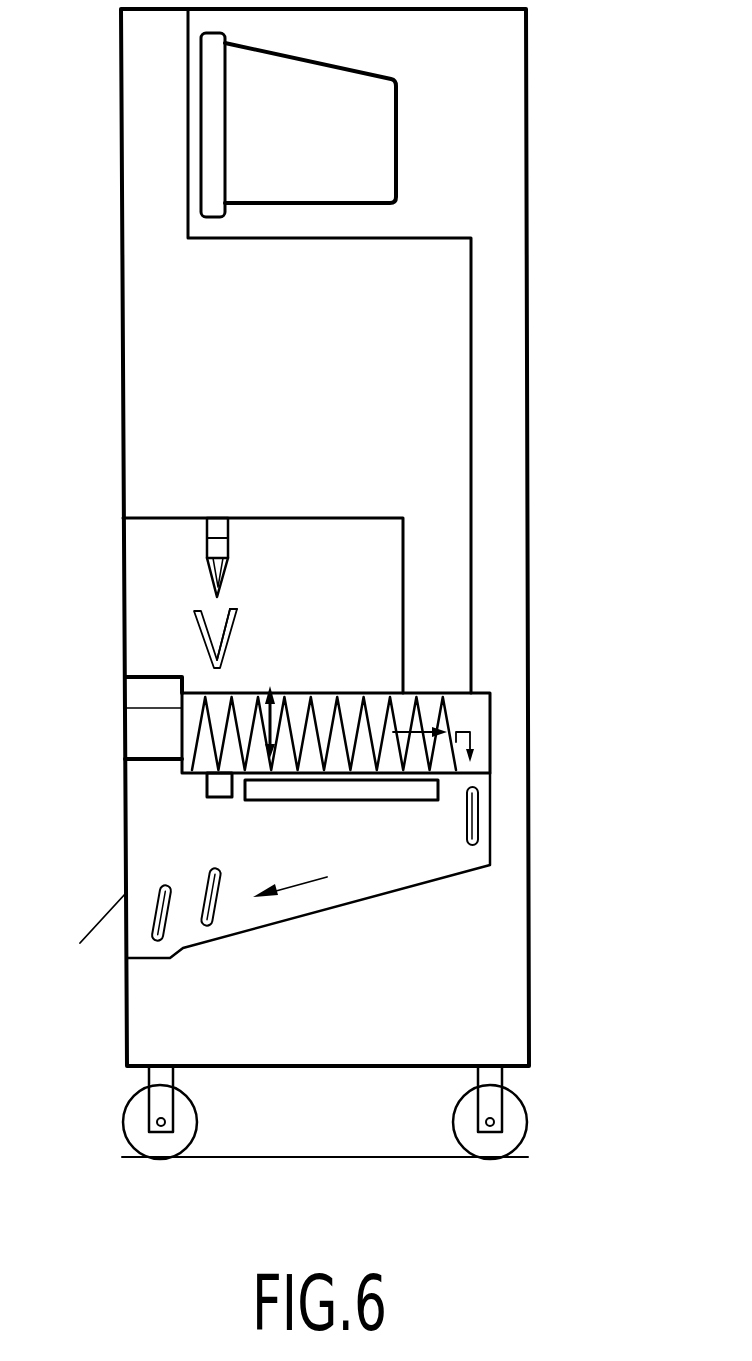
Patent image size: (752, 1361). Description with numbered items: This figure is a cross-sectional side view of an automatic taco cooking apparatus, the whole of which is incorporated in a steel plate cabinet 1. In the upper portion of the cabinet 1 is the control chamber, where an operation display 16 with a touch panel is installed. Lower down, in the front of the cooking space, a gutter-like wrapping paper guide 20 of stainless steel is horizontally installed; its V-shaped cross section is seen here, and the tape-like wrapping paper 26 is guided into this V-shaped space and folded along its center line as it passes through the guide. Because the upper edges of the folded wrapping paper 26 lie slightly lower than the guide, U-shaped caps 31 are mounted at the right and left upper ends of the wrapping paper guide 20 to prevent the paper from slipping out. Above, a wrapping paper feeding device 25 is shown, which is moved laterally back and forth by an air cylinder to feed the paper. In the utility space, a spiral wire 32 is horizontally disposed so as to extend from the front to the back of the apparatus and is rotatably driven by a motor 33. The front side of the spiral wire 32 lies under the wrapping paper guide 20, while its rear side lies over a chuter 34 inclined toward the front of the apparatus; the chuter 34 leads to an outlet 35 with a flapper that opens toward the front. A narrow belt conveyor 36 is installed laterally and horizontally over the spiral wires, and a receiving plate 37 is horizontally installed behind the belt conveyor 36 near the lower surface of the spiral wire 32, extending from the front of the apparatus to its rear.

The cabinet 1 is at (560, 186).
The operation display 16 is at (367, 72).
The wrapping paper guide 20 is at (200, 637).
The wrapping paper feeding device 25 is at (205, 590).
The wrapping paper 26 is at (229, 613).
The U-shaped caps 31 is at (231, 615).
The spiral wire 32 is at (441, 693).
The motor 33 is at (123, 740).
The chuter 34 is at (376, 898).
The outlet 35 is at (126, 923).
The belt conveyor 36 is at (219, 798).
The receiving plate 37 is at (388, 802).